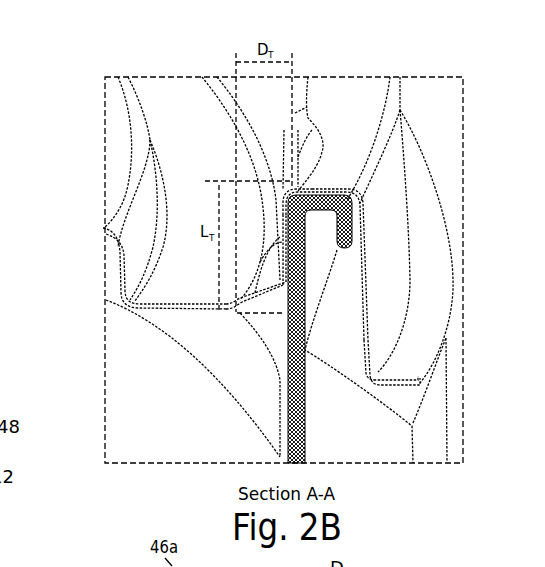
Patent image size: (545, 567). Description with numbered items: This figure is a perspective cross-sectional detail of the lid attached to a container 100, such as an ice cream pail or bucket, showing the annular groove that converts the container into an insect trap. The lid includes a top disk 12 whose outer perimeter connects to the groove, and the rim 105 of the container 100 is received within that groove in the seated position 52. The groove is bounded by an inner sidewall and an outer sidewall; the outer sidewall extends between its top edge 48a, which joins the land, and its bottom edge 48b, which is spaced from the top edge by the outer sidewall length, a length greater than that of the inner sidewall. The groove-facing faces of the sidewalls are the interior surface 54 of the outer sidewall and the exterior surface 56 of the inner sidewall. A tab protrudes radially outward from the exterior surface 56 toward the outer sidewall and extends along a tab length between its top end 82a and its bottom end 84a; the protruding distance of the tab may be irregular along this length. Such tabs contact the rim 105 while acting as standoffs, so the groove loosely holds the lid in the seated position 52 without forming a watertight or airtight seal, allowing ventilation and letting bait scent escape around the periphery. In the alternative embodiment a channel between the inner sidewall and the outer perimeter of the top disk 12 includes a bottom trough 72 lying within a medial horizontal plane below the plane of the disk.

The top disk 12 is at (115, 168).
The seated position 52 is at (455, 73).
The interior surface of the outer sidewall 54 is at (364, 309).
The exterior surface of the inner sidewall 56 is at (285, 252).
The bottom trough 72 is at (157, 307).
The top end of the tab 82a is at (287, 191).
The bottom end of the tab 84a is at (230, 305).
The top edge of the outer sidewall 48a is at (363, 197).
The bottom edge of the outer sidewall 48b is at (378, 373).
The container 100 is at (320, 429).
The rim of the container 105 is at (352, 211).